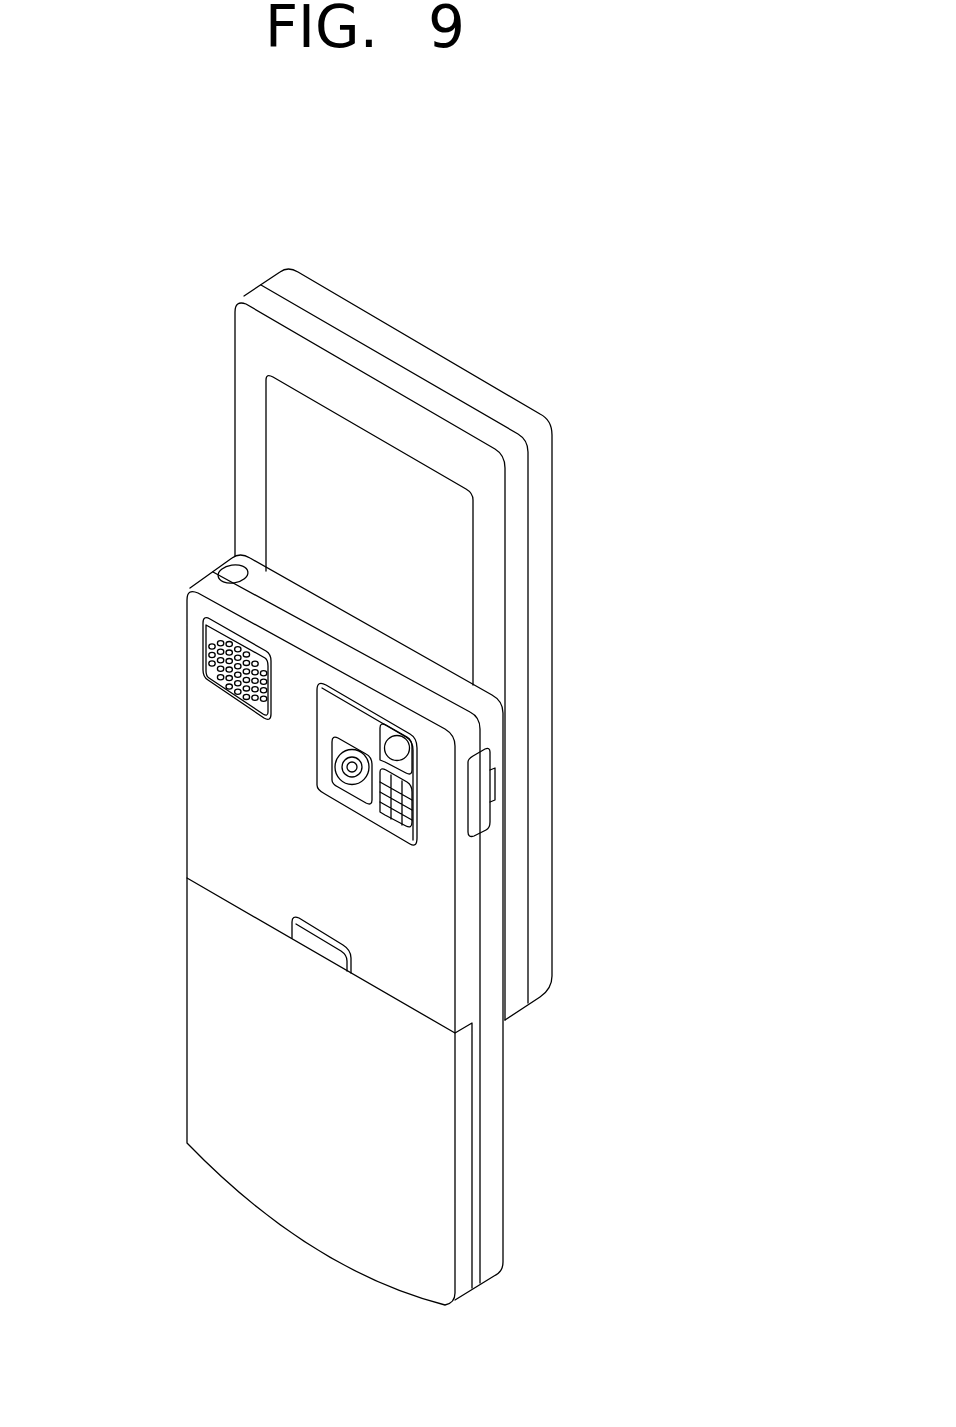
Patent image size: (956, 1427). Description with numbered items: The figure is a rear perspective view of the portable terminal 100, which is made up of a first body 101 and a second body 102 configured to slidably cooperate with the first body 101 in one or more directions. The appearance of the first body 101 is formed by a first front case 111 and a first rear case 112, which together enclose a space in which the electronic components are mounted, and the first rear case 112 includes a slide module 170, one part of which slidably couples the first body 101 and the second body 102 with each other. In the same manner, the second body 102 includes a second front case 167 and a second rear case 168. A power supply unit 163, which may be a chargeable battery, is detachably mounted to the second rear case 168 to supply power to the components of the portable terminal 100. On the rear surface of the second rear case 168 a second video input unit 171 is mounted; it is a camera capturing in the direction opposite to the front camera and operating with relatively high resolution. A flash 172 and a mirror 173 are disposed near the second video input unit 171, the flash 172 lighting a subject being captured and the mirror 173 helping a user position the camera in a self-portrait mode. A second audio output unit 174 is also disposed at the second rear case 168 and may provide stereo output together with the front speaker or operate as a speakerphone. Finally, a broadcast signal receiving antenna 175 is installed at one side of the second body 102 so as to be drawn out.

The portable terminal 100 is at (523, 310).
The first body 101 is at (200, 430).
The second body 102 is at (167, 778).
The first front case 111 is at (285, 280).
The first rear case 112 is at (265, 295).
The power supply unit 163 is at (205, 977).
The second front case 167 is at (495, 1050).
The second rear case 168 is at (467, 983).
The slide module 170 is at (267, 503).
The second video input unit 171 is at (355, 768).
The flash 172 is at (392, 803).
The mirror 173 is at (397, 748).
The second audio output unit 174 is at (213, 662).
The broadcast signal receiving antenna 175 is at (232, 570).